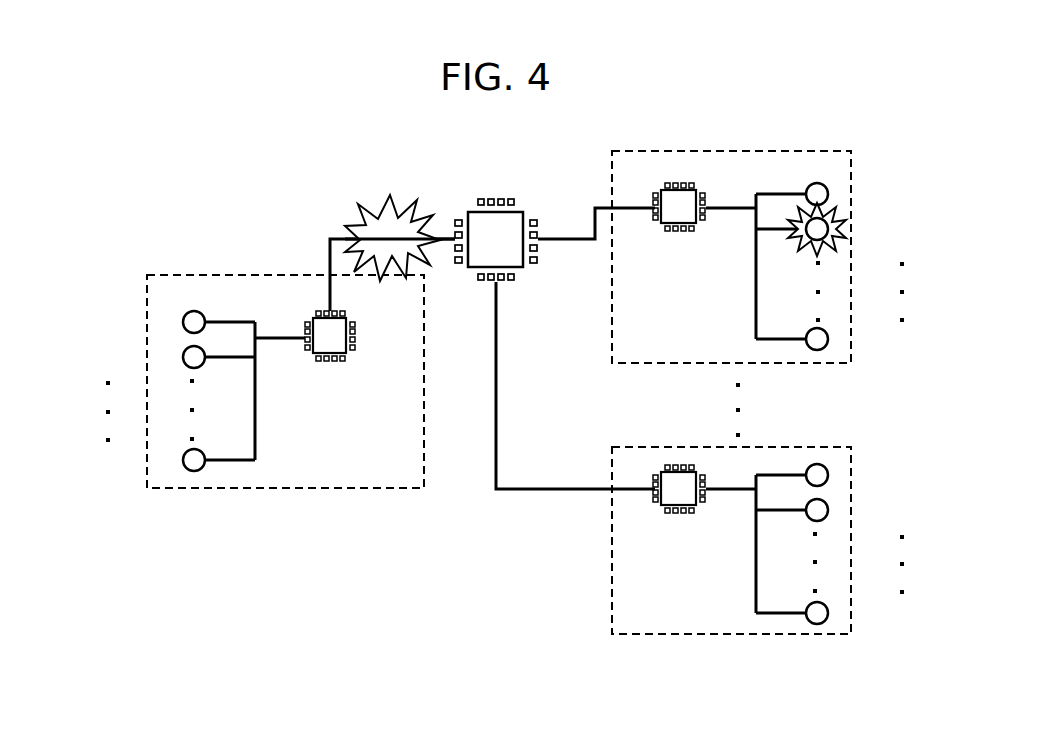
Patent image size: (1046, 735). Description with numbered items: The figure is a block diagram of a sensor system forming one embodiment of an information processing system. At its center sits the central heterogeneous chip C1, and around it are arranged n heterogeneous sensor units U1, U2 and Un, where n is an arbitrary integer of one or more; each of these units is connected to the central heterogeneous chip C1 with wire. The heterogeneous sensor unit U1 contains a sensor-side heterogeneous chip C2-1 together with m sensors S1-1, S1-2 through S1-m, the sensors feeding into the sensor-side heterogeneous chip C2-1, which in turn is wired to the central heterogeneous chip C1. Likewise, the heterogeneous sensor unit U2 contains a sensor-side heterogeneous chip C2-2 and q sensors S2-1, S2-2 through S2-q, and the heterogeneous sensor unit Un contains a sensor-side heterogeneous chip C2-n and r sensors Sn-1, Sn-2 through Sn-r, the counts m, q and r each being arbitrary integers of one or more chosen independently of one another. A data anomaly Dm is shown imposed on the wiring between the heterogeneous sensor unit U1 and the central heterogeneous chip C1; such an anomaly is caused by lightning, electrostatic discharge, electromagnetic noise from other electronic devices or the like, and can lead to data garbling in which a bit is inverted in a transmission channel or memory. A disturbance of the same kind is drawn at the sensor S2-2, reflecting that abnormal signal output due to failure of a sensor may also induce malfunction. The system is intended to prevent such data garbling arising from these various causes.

The central heterogeneous chip C1 is at (495, 197).
The data anomaly Dm is at (391, 208).
The sensor-side heterogeneous chip C2-1 is at (330, 368).
The sensor-side heterogeneous chip C2-2 is at (680, 236).
The sensor-side heterogeneous chip C2-n is at (680, 518).
The heterogeneous sensor unit U1 is at (385, 489).
The heterogeneous sensor unit U2 is at (778, 150).
The heterogeneous sensor unit Un is at (778, 636).
The sensor S1-1 is at (183, 322).
The sensor S1-2 is at (183, 357).
The sensor S1-m is at (183, 461).
The sensor S2-1 is at (829, 194).
The sensor S2-2 is at (835, 229).
The sensor S2-q is at (829, 339).
The sensor Sn-1 is at (829, 475).
The sensor Sn-2 is at (829, 510).
The sensor Sn-r is at (829, 613).